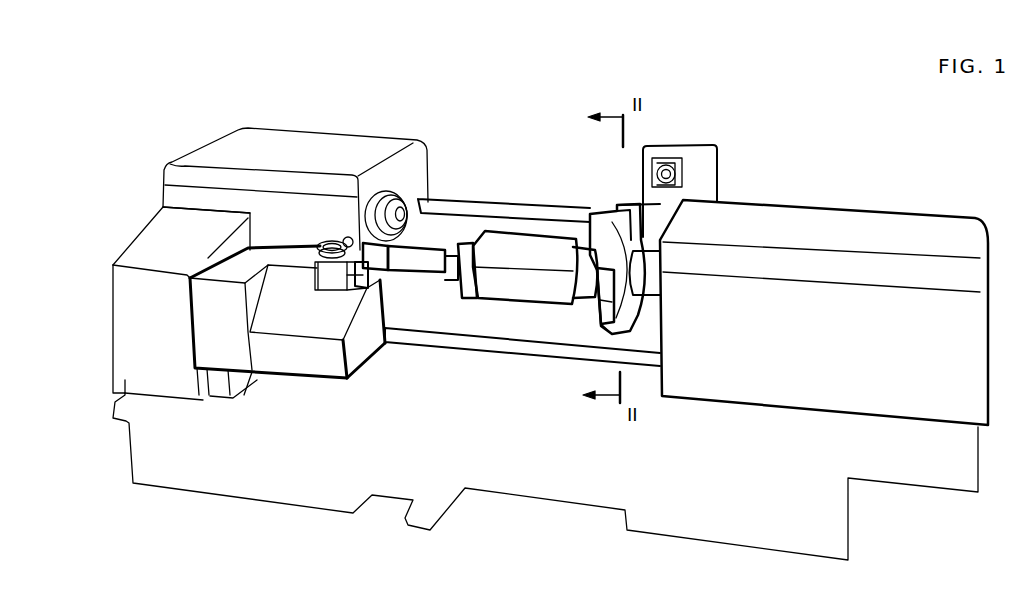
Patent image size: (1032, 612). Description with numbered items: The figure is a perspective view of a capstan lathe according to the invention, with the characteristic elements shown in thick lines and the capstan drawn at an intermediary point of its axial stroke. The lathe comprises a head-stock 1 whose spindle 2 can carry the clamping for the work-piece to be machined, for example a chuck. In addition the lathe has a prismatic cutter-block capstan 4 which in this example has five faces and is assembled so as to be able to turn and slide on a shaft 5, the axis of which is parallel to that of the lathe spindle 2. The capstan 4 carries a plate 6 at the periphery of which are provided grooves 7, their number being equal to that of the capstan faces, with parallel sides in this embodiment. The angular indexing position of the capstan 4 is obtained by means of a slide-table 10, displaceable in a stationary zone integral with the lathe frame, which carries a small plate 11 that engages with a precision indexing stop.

The head-stock 1 is at (367, 155).
The spindle 2 is at (413, 193).
The capstan 4 is at (518, 287).
The shaft 5 is at (417, 257).
The plate 6 is at (605, 295).
The grooves 7 is at (592, 258).
The slide-table 10 is at (604, 258).
The small plate 11 is at (667, 160).